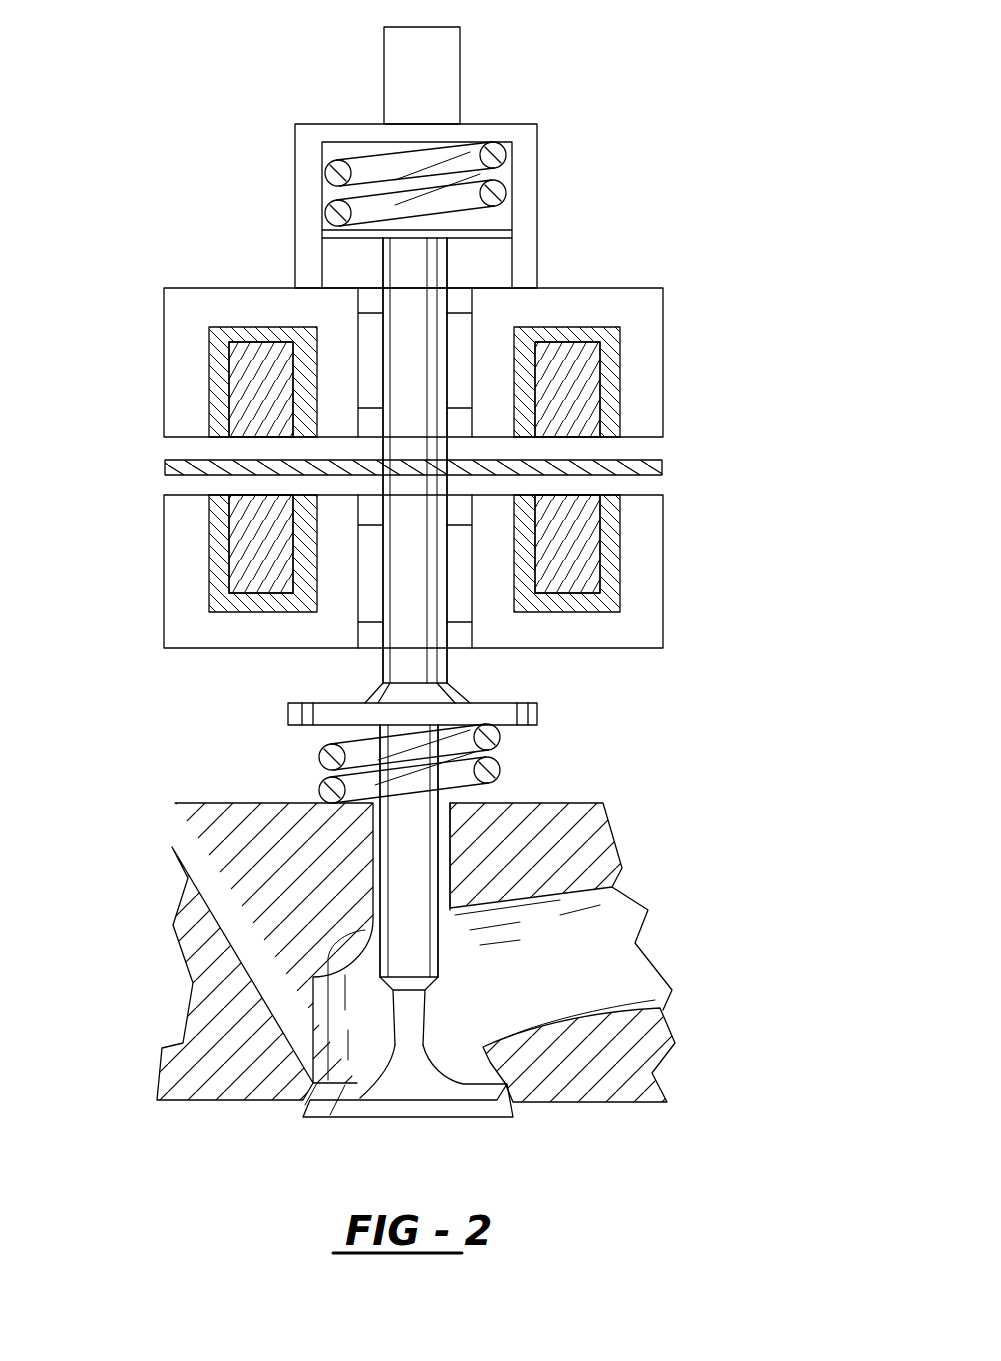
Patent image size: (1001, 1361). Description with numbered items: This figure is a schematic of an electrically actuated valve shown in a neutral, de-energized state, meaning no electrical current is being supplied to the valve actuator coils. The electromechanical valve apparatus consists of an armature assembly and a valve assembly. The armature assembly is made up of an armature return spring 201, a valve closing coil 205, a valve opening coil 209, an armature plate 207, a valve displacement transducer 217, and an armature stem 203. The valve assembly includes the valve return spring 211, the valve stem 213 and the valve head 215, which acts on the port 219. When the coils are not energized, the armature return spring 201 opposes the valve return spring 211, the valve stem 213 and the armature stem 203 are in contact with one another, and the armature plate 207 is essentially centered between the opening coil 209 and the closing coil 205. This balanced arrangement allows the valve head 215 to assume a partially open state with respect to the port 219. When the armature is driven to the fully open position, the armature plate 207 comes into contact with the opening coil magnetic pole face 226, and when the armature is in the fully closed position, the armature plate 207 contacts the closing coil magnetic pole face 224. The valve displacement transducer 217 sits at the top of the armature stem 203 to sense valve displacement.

The armature return spring 201 is at (510, 185).
The armature stem 203 is at (383, 262).
The valve closing coil 205 is at (620, 372).
The armature plate 207 is at (663, 464).
The valve opening coil 209 is at (620, 553).
The valve return spring 211 is at (497, 762).
The valve stem 213 is at (403, 857).
The valve head 215 is at (482, 1117).
The valve displacement transducer 217 is at (462, 75).
The port 219 is at (483, 1047).
The closing coil magnetic pole face 224 is at (247, 438).
The opening coil magnetic pole face 226 is at (260, 495).